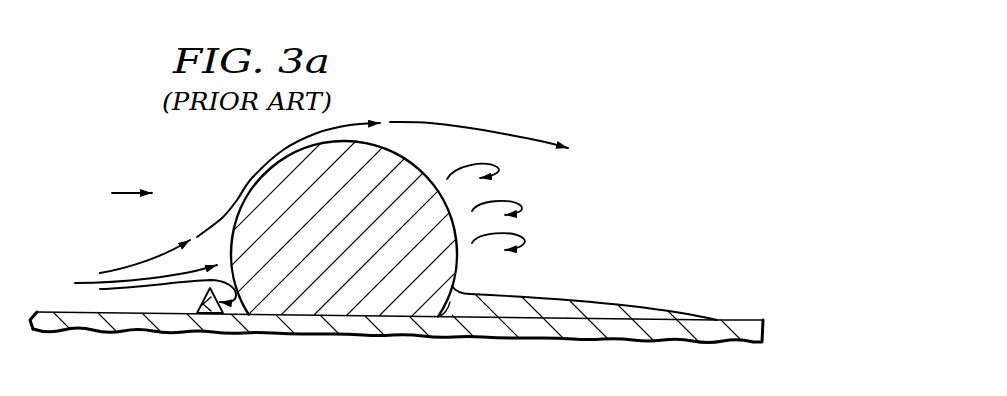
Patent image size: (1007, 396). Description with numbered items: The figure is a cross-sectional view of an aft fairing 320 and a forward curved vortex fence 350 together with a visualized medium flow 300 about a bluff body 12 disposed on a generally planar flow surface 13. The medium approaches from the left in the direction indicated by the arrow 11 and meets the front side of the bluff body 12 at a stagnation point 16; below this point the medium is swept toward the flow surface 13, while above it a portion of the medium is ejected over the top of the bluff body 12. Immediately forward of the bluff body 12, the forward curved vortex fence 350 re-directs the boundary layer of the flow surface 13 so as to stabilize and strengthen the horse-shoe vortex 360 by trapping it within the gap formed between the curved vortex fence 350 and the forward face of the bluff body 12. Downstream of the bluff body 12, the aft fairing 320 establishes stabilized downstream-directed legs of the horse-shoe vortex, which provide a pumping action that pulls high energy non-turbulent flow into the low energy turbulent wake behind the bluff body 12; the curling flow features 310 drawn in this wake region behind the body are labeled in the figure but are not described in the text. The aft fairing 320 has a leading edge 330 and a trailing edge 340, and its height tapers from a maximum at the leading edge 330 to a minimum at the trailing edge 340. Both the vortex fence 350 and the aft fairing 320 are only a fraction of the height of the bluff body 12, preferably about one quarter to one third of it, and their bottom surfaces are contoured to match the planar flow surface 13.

The arrow indicating direction of medium flow 11 is at (130, 192).
The bluff body 12 is at (457, 257).
The flow surface 13 is at (740, 318).
The stagnation point 16 is at (228, 256).
The visualized medium flow 300 is at (492, 106).
The vortices downstream of particle 310 is at (500, 171).
The aft fairing 320 is at (632, 313).
The leading edge 330 is at (447, 321).
The trailing edge 340 is at (715, 316).
The forward curved vortex fence 350 is at (213, 311).
The horse-shoe vortex 360 is at (234, 308).